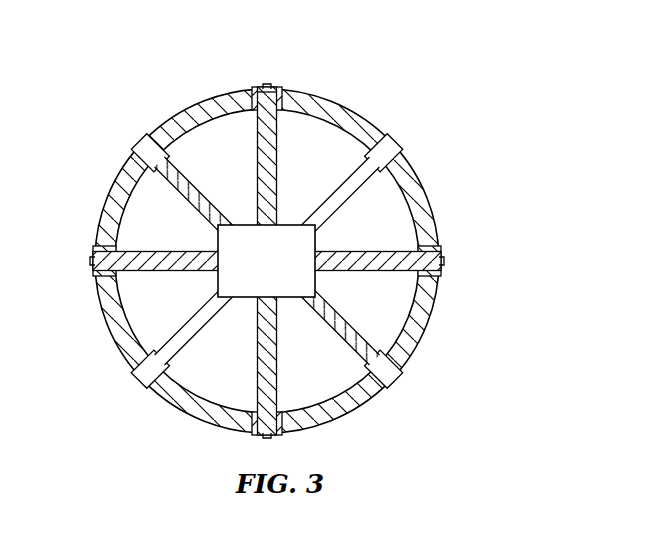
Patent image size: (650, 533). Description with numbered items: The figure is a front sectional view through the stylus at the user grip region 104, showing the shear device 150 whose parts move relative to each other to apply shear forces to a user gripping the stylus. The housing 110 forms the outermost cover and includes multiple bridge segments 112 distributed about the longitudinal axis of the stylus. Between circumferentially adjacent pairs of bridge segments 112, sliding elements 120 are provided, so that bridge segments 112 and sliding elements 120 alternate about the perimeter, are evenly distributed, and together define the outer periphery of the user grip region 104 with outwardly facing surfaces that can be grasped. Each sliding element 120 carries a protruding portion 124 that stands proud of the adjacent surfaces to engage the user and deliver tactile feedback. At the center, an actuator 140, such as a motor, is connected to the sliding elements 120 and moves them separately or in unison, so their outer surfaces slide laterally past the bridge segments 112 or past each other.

The user grip region 104 is at (154, 78).
The housing 110 is at (350, 106).
The bridge segments 112 is at (428, 330).
The sliding elements 120 is at (440, 252).
The protruding portion 124 is at (395, 143).
The actuator 140 is at (293, 222).
The shear device 150 is at (256, 78).